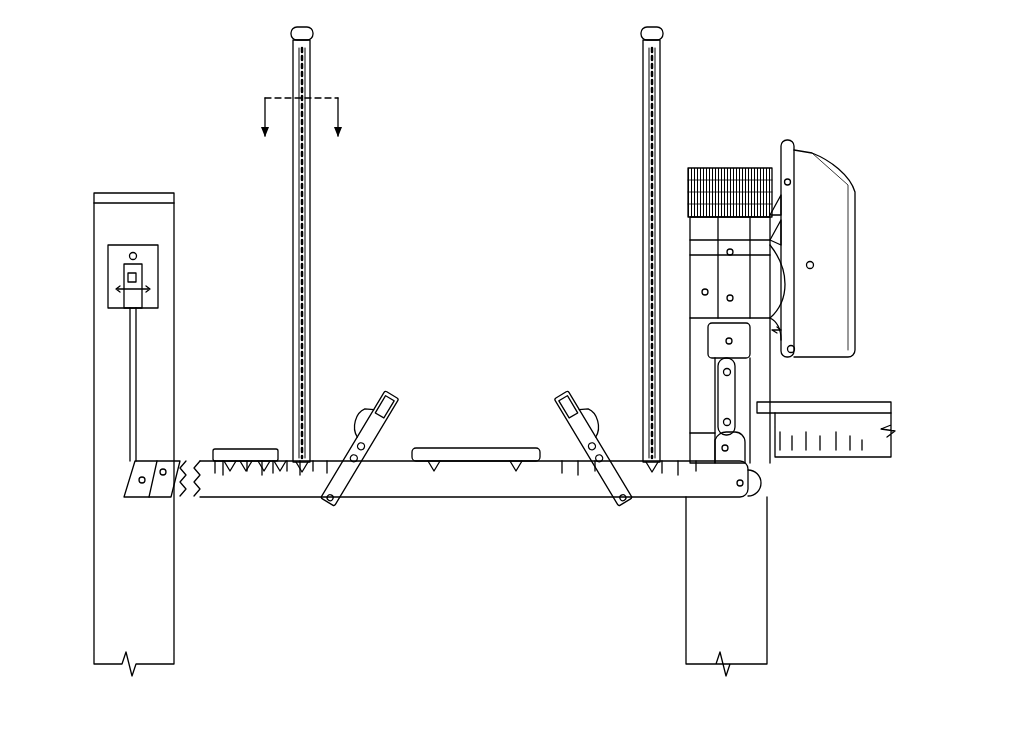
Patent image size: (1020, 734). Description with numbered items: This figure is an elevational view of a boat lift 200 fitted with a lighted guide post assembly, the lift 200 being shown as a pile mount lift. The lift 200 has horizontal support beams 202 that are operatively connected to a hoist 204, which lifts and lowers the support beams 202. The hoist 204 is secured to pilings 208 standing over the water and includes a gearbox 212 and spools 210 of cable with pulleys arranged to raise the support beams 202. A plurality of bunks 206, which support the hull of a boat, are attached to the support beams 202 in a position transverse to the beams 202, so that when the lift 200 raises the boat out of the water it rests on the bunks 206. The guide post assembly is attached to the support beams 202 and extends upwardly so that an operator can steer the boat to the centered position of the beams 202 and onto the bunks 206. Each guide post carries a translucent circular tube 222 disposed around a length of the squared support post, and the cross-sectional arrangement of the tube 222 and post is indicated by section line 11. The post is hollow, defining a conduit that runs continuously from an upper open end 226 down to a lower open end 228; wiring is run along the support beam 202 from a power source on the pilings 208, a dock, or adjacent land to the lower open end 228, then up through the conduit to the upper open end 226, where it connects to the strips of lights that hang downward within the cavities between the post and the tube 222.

The boat lift 200 is at (138, 44).
The horizontal support beams 202 is at (475, 490).
The hoist 204 is at (786, 133).
The bunks 206 is at (386, 394).
The pilings 208 is at (110, 552).
The spools 210 is at (749, 168).
The gearbox 212 is at (840, 303).
The translucent circular tube 222 is at (310, 250).
The upper open end 226 is at (316, 44).
The lower open end 228 is at (293, 453).
The section line 11- 11 is at (306, 135).